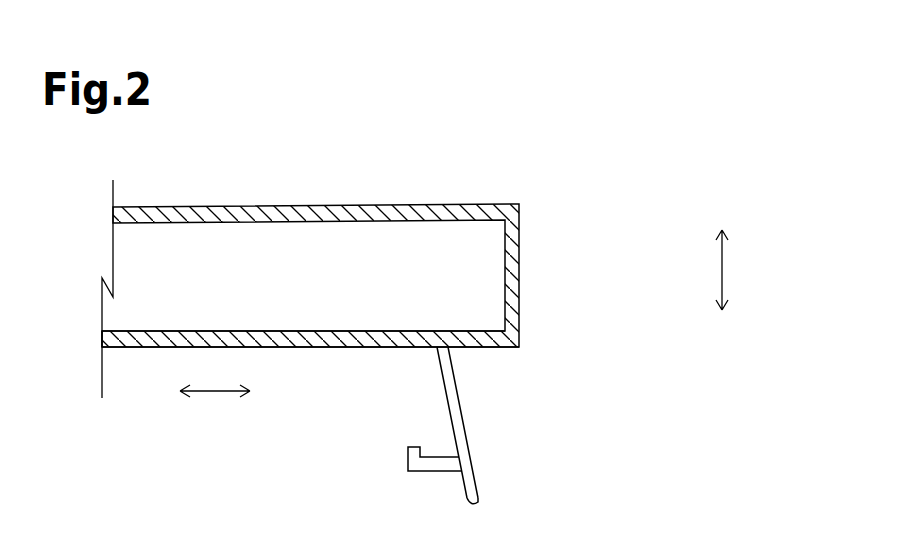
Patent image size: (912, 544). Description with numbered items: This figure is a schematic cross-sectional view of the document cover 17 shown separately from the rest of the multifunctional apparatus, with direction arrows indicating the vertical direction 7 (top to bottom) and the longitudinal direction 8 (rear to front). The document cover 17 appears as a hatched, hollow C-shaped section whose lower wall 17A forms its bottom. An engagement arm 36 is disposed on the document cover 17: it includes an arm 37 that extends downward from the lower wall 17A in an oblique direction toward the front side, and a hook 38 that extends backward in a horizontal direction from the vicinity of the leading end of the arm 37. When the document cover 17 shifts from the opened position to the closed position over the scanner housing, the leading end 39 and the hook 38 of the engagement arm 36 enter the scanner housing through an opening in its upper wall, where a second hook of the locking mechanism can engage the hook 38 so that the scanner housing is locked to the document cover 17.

The vertical direction 7 is at (722, 272).
The longitudinal direction 8 is at (215, 392).
The document cover 17 is at (519, 275).
The lower wall 17A is at (408, 347).
The engagement arm 36 is at (453, 425).
The arm 37 is at (456, 387).
The hook 38 is at (407, 448).
The leading end 39 is at (480, 502).